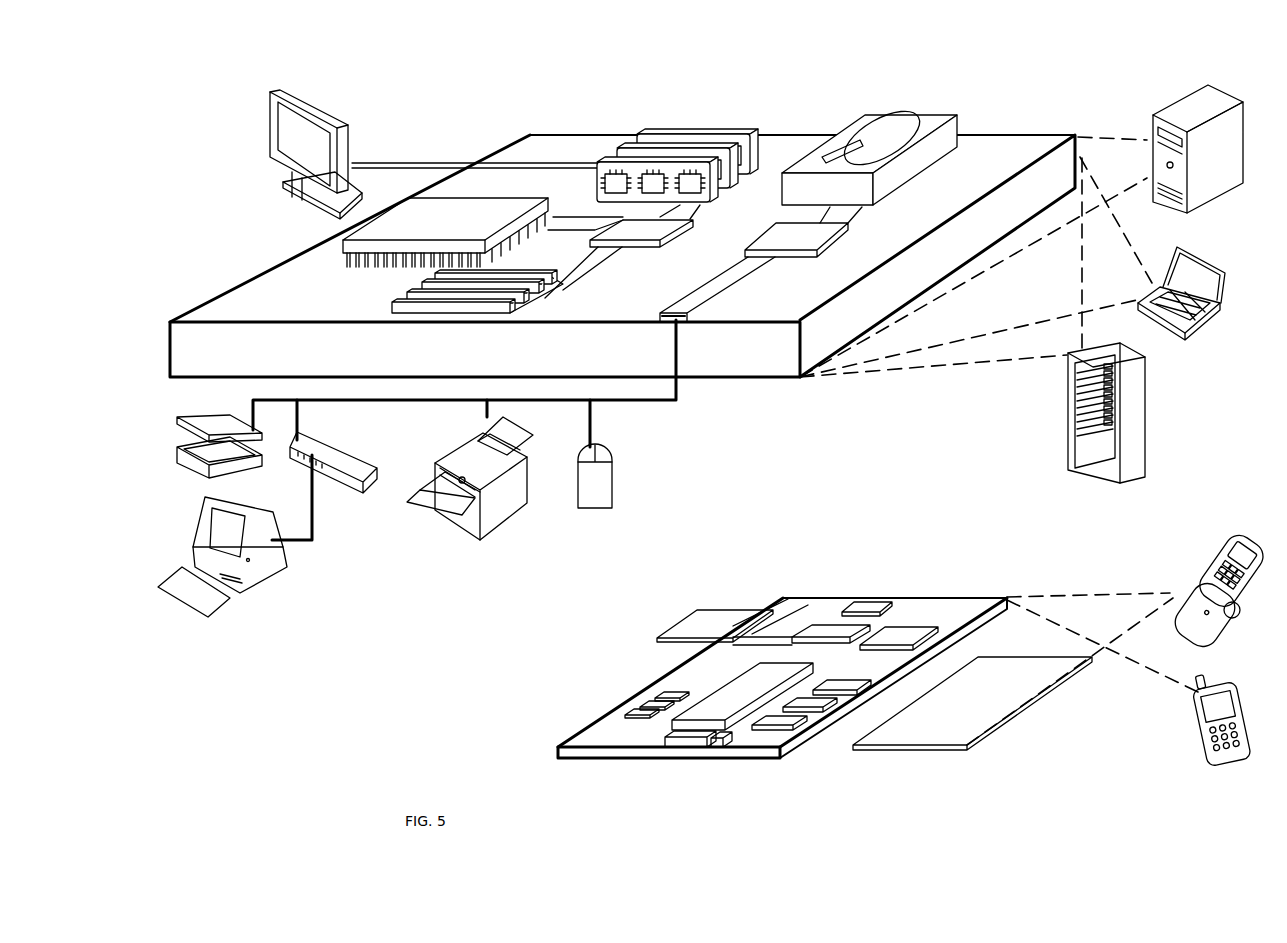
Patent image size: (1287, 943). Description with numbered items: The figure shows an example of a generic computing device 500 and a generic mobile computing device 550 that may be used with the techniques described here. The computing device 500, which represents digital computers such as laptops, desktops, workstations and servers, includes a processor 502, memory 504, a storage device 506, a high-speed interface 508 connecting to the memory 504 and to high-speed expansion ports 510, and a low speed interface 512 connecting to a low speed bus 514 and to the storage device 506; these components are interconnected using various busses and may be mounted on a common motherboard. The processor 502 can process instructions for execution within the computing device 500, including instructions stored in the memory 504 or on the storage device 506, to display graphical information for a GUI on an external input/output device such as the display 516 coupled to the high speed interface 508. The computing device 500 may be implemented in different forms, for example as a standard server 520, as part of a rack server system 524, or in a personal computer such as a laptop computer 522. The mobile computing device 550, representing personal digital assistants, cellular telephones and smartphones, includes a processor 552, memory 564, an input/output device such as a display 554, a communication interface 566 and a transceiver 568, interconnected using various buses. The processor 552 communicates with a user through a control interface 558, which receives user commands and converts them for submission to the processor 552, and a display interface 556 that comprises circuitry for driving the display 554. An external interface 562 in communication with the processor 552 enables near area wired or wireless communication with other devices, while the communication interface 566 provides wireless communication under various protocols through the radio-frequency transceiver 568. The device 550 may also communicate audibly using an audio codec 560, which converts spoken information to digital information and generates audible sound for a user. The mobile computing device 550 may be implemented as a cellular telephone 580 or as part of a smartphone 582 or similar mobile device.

The computing device 500 is at (461, 106).
The processor 502 is at (343, 252).
The memory 504 is at (640, 132).
The storage device 506 is at (872, 125).
The high-speed interface 508 is at (617, 230).
The high-speed expansion ports 510 is at (408, 289).
The low speed interface 512 is at (797, 233).
The low speed bus 514 is at (683, 322).
The display 516 is at (268, 93).
The standard server 520 is at (1153, 120).
The laptop computer 522 is at (1177, 250).
The rack server system 524 is at (1068, 437).
The mobile computing device 550 is at (762, 572).
The processor 552 is at (703, 733).
The display 554 is at (970, 747).
The display interface 556 is at (782, 733).
The control interface 558 is at (830, 705).
The audio codec 560 is at (865, 602).
The external interface 562 is at (758, 608).
The memory 564 is at (697, 610).
The communication interface 566 is at (830, 633).
The transceiver 568 is at (900, 633).
The cellular telephone 580 is at (1223, 547).
The smartphone 582 is at (1208, 673).